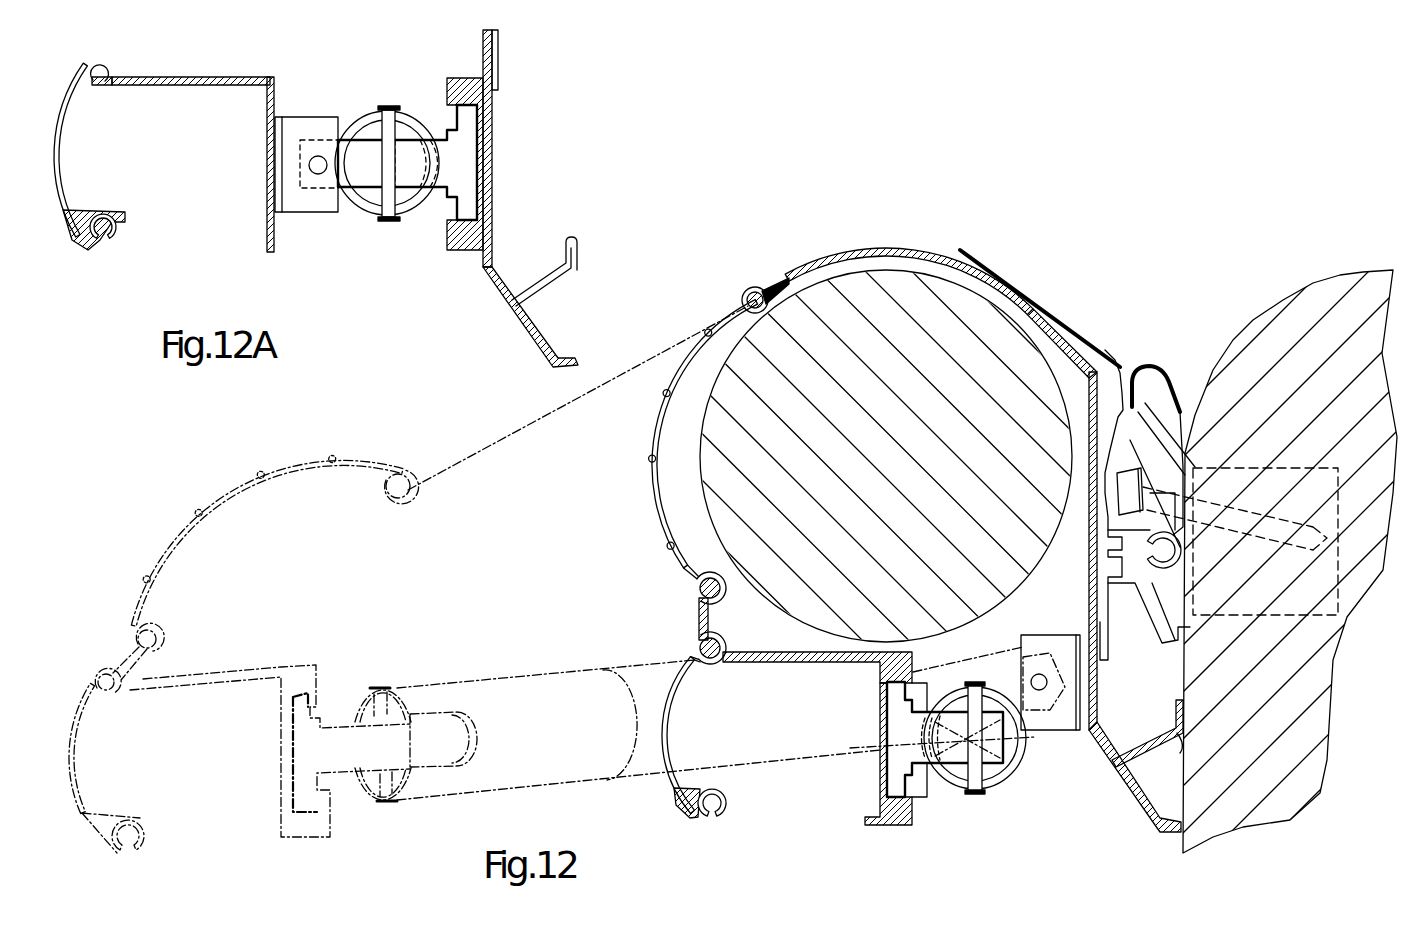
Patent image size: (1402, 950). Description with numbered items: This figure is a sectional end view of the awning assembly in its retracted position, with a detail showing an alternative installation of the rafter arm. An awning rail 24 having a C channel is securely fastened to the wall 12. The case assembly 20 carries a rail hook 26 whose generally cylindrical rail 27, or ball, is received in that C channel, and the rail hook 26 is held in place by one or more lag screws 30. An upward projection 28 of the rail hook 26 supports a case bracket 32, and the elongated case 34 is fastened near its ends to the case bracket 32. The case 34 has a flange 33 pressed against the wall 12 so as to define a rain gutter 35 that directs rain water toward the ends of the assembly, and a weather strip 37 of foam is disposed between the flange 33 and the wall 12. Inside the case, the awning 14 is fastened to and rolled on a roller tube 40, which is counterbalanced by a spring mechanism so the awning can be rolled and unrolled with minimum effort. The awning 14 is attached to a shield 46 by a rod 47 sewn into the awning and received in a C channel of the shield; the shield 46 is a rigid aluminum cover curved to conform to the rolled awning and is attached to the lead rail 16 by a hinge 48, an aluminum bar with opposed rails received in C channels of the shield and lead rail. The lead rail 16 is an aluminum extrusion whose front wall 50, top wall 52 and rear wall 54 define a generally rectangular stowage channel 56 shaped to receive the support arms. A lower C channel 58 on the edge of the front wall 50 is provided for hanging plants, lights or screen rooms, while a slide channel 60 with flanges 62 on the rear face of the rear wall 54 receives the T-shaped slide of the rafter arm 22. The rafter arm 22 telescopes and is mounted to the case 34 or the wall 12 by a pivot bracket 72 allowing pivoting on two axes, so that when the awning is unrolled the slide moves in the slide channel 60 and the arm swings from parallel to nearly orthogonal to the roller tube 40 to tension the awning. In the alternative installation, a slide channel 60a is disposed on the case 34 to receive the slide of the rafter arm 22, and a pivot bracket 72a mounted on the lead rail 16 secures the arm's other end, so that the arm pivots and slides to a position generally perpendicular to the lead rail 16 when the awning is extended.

In FIG. 12, the wall 12 is at (1157, 783).
In FIG. 12, the awning 14 is at (760, 290).
In FIG. 12, the lead rail 16 is at (683, 826).
In FIG. 12A, the lead rail 16 is at (53, 193).
In FIG. 12, the case assembly 20 is at (1047, 240).
In FIG. 12, the rafter arm 22 is at (1010, 778).
In FIG. 12A, the rafter arm 22 is at (360, 117).
In FIG. 12, the awning rail 24 is at (1163, 585).
In FIG. 12, the rail hook 26 is at (1146, 642).
In FIG. 12, the rail 27 is at (1148, 592).
In FIG. 12, the upward projection 28 is at (1147, 366).
In FIG. 12, the lag screw 30 is at (1172, 400).
In FIG. 12, the case bracket 32 is at (1053, 312).
In FIG. 12, the flange 33 is at (1110, 765).
In FIG. 12, the case 34 is at (904, 247).
In FIG. 12A, the case 34 is at (493, 193).
In FIG. 12, the rain gutter 35 is at (1166, 700).
In FIG. 12, the weather strip 37 is at (1180, 745).
In FIG. 12, the roller tube 40 is at (866, 306).
In FIG. 12, the shield 46 is at (713, 318).
In FIG. 12, the rod 47 is at (748, 290).
In FIG. 12, the hinge 48 is at (697, 617).
In FIG. 12, the front wall 50 is at (668, 780).
In FIG. 12, the top wall 52 is at (818, 662).
In FIG. 12, the rear wall 54 is at (880, 760).
In FIG. 12, the stowage channel 56 is at (796, 818).
In FIG. 12, the lower C channel 58 is at (712, 828).
In FIG. 12, the slide channel 60 is at (920, 776).
In FIG. 12, the flanges 62 is at (912, 690).
In FIG. 12, the pivot bracket 72 is at (1053, 746).
In FIG. 12A, the pivot bracket 72a is at (327, 213).
In FIG. 12A, the slide channel 60a is at (470, 253).